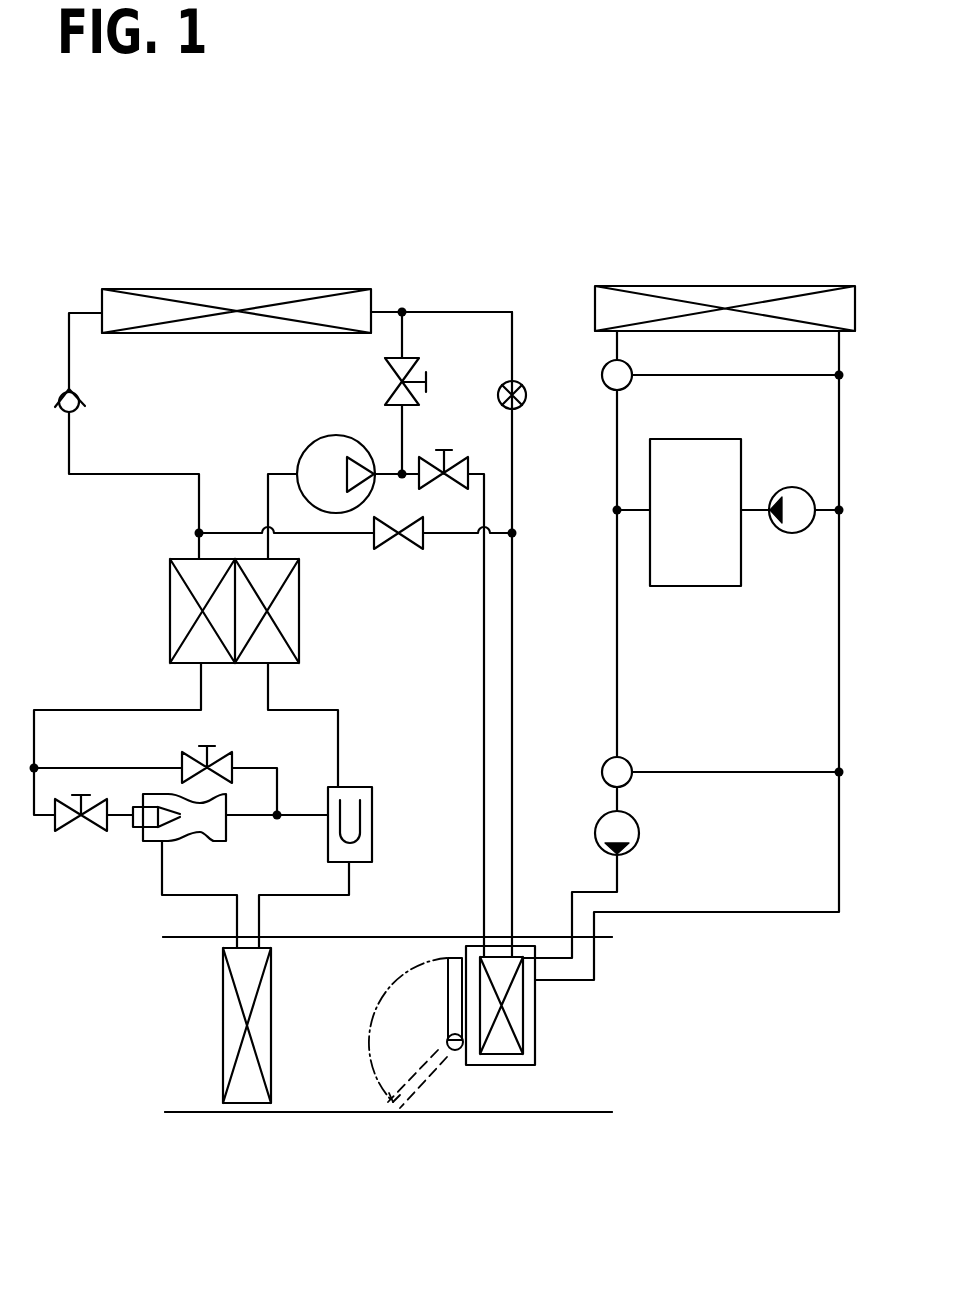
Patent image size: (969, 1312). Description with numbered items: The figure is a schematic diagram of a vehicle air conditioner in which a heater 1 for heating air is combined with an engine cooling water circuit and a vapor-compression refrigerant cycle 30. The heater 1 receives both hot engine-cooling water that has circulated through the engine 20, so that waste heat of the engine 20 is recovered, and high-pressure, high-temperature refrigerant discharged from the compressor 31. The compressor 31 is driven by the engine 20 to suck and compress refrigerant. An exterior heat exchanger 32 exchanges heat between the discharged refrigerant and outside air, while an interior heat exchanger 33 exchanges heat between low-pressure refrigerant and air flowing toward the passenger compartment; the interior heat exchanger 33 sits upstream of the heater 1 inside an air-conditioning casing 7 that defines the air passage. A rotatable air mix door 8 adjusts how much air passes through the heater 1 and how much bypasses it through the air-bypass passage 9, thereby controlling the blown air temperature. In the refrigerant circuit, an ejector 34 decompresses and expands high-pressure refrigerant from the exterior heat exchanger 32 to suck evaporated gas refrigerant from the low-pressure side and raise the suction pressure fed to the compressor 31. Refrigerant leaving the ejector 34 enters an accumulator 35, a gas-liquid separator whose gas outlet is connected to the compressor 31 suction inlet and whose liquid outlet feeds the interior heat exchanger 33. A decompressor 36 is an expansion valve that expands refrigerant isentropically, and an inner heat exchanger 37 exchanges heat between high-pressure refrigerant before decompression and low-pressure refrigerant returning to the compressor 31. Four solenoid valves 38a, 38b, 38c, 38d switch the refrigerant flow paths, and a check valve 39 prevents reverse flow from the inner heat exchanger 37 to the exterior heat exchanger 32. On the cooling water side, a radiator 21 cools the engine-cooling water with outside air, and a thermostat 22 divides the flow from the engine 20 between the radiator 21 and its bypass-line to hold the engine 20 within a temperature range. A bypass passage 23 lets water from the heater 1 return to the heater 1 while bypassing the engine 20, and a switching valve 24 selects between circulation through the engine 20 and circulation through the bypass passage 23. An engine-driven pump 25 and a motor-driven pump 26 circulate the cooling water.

The heater 1 is at (528, 946).
The air-conditioning casing 7 is at (412, 937).
The air mix door 8 is at (455, 957).
The air-bypass passage 9 is at (510, 1112).
The engine 20 is at (698, 439).
The radiator 21 is at (727, 286).
The thermostat 22 is at (602, 372).
The bypass passage 23 is at (727, 772).
The switching valve 24 is at (632, 766).
The pump 25 is at (793, 487).
The pump 26 is at (640, 832).
The vapor-compression refrigerant cycle 30 is at (402, 312).
The compressor 31 is at (337, 435).
The exterior heat exchanger 32 is at (240, 289).
The interior heat exchanger 33 is at (271, 965).
The ejector 34 is at (226, 835).
The accumulator 35 is at (372, 818).
The decompressor 36 is at (527, 395).
The inner heat exchanger 37 is at (299, 612).
The solenoid valve 38a is at (466, 457).
The solenoid valve 38b is at (419, 358).
The solenoid valve 38c is at (232, 760).
The solenoid valve 38d is at (100, 830).
The check valve 39 is at (80, 402).